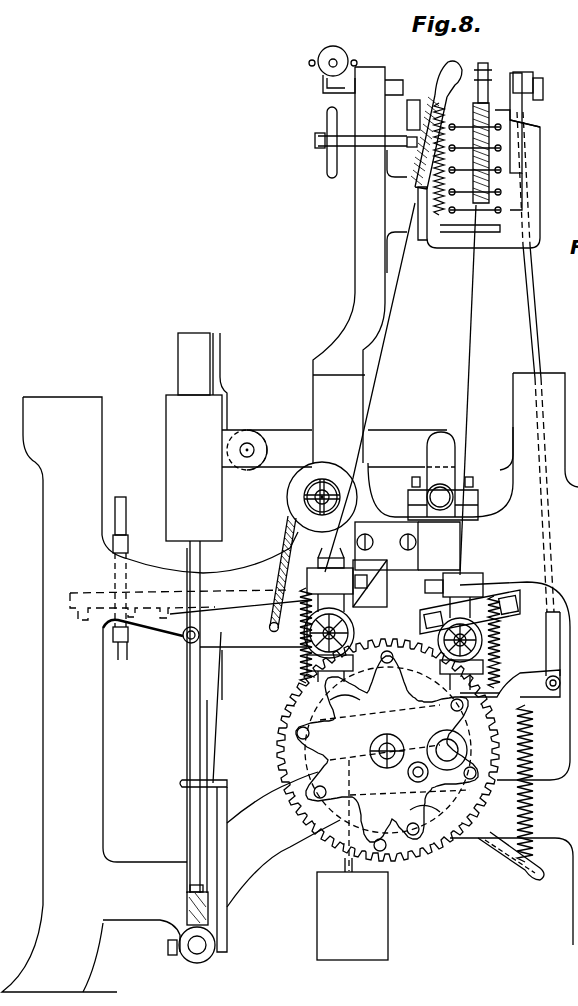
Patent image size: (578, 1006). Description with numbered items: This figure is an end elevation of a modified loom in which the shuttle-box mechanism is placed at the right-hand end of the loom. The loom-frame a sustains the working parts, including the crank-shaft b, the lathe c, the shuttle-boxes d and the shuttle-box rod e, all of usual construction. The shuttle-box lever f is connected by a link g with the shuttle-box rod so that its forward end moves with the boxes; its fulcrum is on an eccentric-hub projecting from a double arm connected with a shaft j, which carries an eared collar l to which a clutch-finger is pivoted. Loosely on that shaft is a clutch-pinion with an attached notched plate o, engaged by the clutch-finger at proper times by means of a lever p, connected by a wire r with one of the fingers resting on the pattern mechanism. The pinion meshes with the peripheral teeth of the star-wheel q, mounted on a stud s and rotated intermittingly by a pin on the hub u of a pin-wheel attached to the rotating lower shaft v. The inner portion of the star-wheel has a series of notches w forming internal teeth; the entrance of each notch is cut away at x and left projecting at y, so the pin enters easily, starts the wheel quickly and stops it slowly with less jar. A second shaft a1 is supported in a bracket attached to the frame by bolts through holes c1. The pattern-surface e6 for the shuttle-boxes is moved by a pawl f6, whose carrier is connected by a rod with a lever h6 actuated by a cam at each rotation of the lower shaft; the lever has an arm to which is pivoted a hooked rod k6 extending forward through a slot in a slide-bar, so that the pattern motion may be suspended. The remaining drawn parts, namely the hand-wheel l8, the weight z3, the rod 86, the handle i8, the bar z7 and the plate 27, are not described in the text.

The shuttle-box rod e is at (95, 445).
The shuttle-boxes d is at (202, 381).
The lathe c is at (239, 644).
The link g is at (187, 668).
The hooked rod k6 is at (157, 617).
The loom-frame a is at (176, 591).
The shuttle-box lever f is at (240, 608).
The hand wheel l8 is at (318, 140).
The wire r is at (381, 389).
The crank-shaft b is at (443, 498).
The shaft j is at (326, 625).
The lever p is at (320, 570).
The eared collar l is at (300, 663).
The second shaft a1 is at (484, 726).
The notched plate o is at (470, 612).
The star-wheel q is at (292, 808).
The notches w is at (384, 751).
The cut-away entrance x is at (389, 788).
The projecting portion y is at (379, 759).
The stud s is at (387, 751).
The hub u is at (447, 748).
The lower shaft v is at (424, 762).
The weight z3 is at (352, 909).
The holes c1 is at (515, 722).
The lever h6 is at (546, 688).
The rod 86 is at (535, 362).
The pattern-surface e6 is at (492, 210).
The spring handle i8 is at (460, 78).
The bar z7 is at (525, 107).
The pawl f6 is at (550, 90).
The plate 27 is at (528, 119).